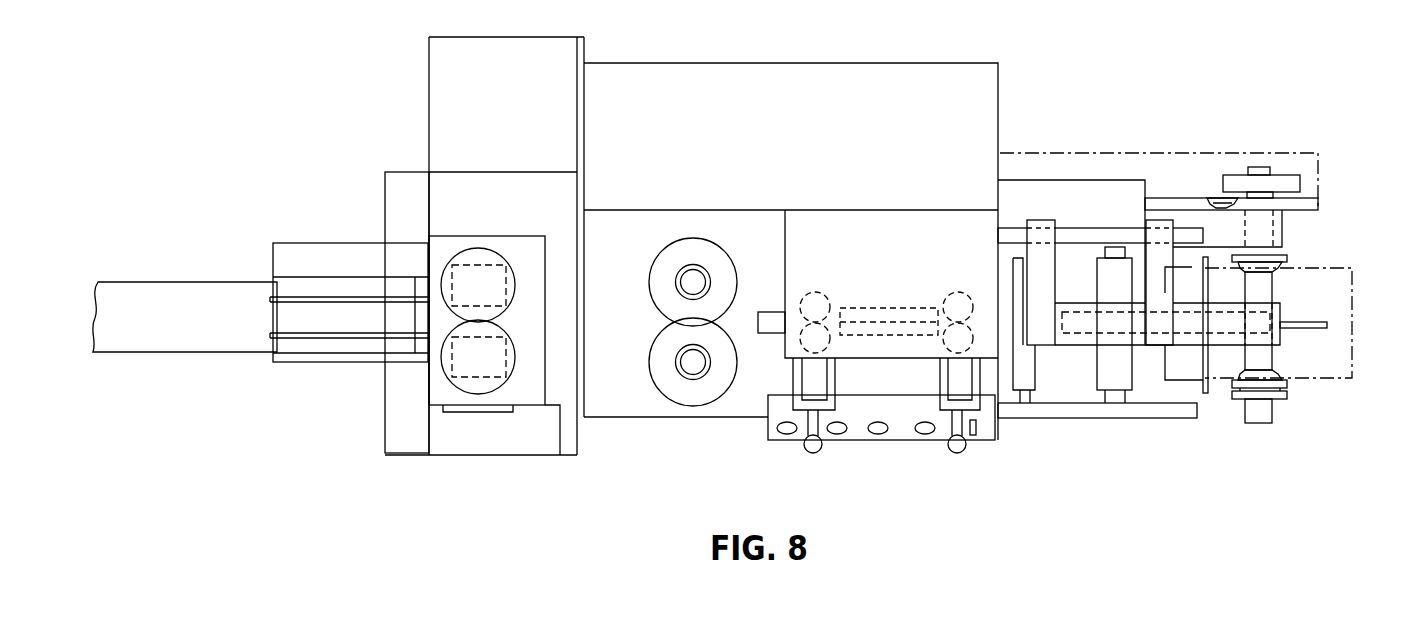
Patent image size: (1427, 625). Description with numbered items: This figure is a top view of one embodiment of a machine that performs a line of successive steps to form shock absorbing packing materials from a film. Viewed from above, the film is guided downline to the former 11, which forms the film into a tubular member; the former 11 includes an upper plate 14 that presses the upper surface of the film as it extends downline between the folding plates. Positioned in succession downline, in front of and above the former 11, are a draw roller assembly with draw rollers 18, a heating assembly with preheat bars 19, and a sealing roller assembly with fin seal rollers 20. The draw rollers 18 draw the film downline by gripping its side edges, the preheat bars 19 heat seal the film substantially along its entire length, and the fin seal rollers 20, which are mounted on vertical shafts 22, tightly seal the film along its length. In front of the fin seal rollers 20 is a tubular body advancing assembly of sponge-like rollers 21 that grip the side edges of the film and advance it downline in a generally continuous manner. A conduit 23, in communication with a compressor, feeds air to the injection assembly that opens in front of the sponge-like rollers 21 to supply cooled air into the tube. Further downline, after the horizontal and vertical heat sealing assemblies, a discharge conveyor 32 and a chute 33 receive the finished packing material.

The chute 33 is at (218, 355).
The discharge conveyor 32 is at (350, 348).
The vertical shafts 22 is at (689, 280).
The sponge-like rollers 21 is at (717, 248).
The fin seal rollers 20 is at (818, 292).
The preheat bars 19 is at (886, 330).
The draw rollers 18 is at (962, 292).
The upper plate 14 is at (1007, 327).
The former 11 is at (1228, 347).
The conduit 23 is at (1320, 318).